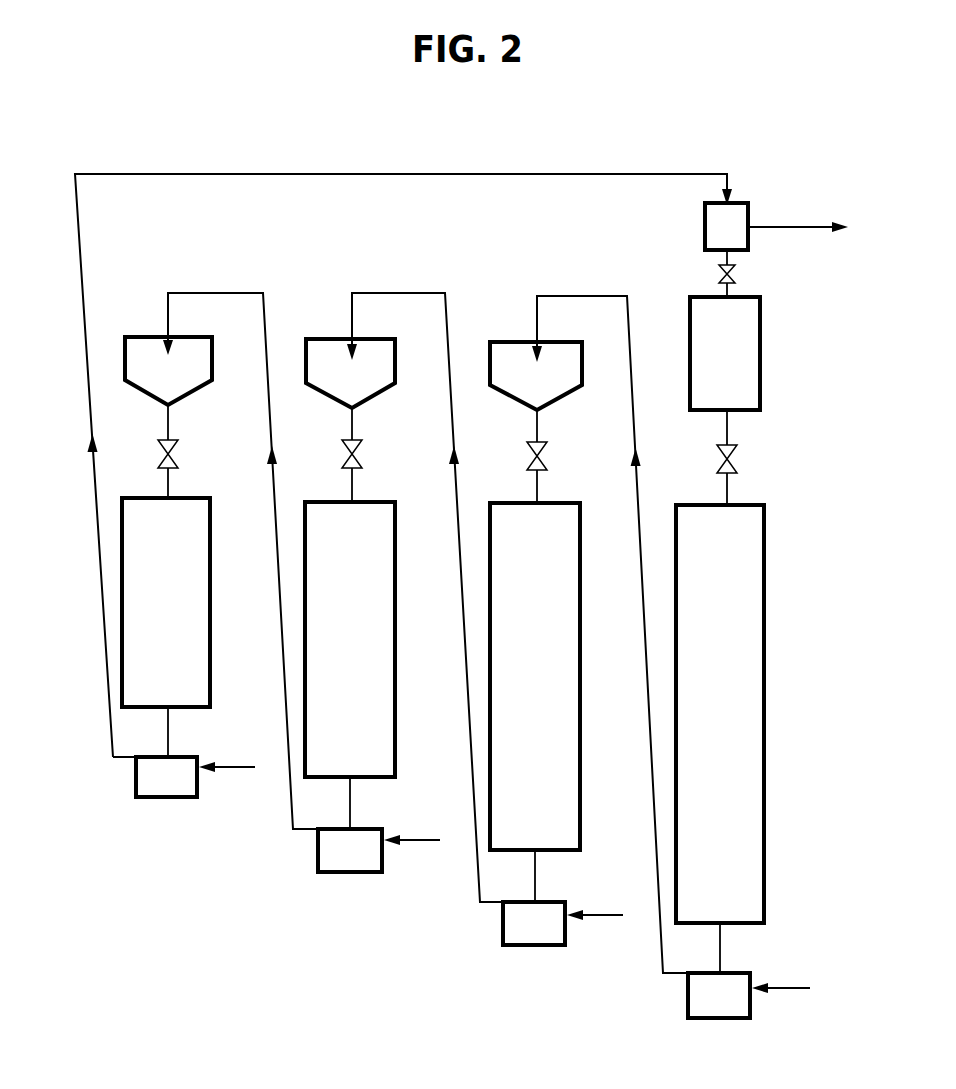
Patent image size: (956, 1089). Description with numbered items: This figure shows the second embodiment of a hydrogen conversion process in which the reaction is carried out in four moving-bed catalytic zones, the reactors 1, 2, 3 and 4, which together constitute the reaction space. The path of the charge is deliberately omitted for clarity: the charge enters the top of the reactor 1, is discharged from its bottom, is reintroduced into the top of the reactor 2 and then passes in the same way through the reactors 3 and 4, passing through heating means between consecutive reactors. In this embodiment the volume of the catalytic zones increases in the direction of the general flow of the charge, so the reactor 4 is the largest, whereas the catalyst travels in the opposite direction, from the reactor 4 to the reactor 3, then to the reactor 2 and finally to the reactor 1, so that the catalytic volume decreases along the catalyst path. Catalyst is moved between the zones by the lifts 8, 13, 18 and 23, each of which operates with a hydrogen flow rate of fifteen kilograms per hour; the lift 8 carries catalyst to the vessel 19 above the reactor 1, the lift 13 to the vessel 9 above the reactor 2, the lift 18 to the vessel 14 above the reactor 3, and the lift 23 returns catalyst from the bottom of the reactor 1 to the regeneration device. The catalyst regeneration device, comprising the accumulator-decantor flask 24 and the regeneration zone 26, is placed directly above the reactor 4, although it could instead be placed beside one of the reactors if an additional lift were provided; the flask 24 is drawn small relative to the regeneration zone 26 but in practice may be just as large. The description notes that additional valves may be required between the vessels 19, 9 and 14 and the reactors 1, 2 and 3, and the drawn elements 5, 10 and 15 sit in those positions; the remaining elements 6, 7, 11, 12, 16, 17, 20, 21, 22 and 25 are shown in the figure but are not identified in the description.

The reactor 1 is at (203, 497).
The reactor 2 is at (383, 500).
The reactor 3 is at (572, 502).
The reactor 4 is at (732, 503).
The valve 5 is at (167, 479).
The outlet conduit 6 is at (168, 733).
The gas inlet 7 is at (228, 767).
The lift 8 is at (293, 808).
The vessel 9 is at (397, 352).
The valve 10 is at (350, 480).
The outlet conduit 11 is at (350, 803).
The gas inlet 12 is at (425, 840).
The lift 13 is at (480, 880).
The vessel 14 is at (583, 353).
The valve 15 is at (535, 483).
The outlet conduit 16 is at (535, 883).
The gas inlet 17 is at (598, 915).
The lift 18 is at (663, 955).
The vessel 19 is at (125, 342).
The valve 20 is at (720, 487).
The outlet conduit 21 is at (720, 952).
The gas inlet 22 is at (793, 988).
The lift 23 is at (107, 713).
The accumulator-decantor flask 24 is at (750, 248).
The valve 25 is at (727, 287).
The regeneration zone 26 is at (760, 320).